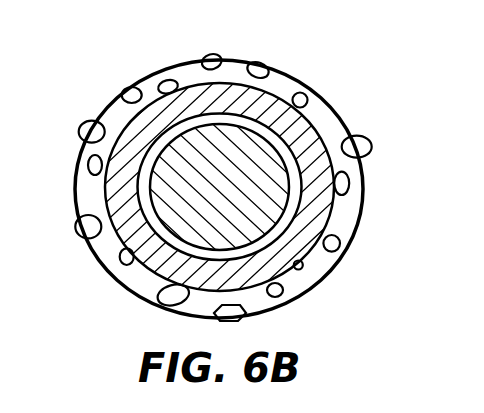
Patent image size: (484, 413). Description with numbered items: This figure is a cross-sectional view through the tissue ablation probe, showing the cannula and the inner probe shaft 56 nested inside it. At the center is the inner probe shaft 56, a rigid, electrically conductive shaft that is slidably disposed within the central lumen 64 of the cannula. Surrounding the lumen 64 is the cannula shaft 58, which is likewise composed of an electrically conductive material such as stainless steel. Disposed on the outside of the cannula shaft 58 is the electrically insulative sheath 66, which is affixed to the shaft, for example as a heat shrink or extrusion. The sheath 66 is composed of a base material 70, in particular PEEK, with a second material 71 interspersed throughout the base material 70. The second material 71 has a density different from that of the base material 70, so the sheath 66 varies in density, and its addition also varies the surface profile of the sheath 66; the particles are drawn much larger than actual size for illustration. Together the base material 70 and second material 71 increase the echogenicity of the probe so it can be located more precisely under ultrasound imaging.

The inner probe shaft 56 is at (270, 217).
The cannula shaft 58 is at (347, 187).
The central lumen 64 is at (283, 154).
The insulative sheath 66 is at (130, 88).
The base material 70 is at (100, 247).
The second material 71 is at (220, 320).